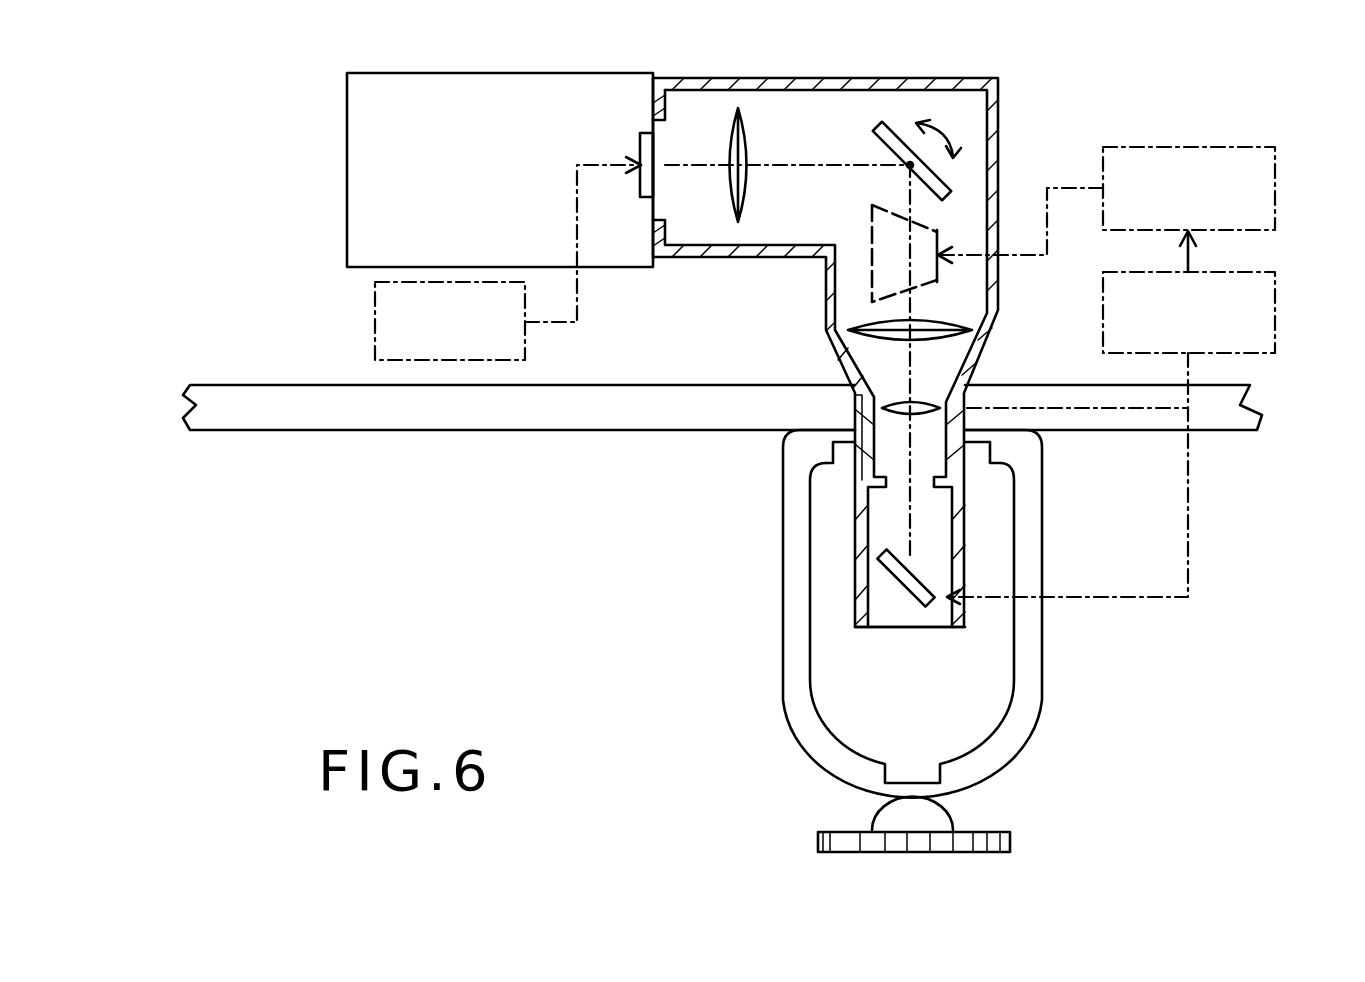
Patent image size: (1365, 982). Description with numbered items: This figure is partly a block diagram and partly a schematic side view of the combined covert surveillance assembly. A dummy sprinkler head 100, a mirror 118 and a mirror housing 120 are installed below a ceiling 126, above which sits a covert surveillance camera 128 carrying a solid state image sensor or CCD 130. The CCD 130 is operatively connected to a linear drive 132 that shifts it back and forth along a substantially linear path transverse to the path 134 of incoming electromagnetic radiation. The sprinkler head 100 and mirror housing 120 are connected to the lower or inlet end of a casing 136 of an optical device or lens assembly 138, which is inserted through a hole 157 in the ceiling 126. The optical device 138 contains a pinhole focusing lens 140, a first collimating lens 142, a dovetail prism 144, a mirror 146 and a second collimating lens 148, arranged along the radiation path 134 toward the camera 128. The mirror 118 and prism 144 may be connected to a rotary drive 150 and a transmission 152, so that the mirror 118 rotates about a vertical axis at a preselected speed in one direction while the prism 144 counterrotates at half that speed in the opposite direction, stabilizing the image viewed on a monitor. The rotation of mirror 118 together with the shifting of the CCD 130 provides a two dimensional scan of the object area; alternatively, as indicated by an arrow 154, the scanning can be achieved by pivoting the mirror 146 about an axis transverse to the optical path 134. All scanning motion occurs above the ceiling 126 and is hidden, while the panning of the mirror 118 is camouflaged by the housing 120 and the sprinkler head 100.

The sprinkler head 100 is at (1037, 667).
The mirror 118 is at (893, 572).
The mirror housing 120 is at (860, 527).
The ceiling 126 is at (423, 418).
The covert surveillance camera 128 is at (457, 87).
The solid state image sensor or CCD 130 is at (643, 148).
The drive 132 is at (375, 309).
The path of incoming electromagnetic radiation 134 is at (775, 162).
The casing 136 is at (993, 113).
The optical device or lens assembly 138 is at (1003, 180).
The pinhole focusing lens 140 is at (927, 400).
The first collimating lens 142 is at (887, 333).
The dovetail prism 144 is at (883, 270).
The mirror 146 is at (880, 125).
The second collimating lens 148 is at (730, 140).
The rotary drive 150 is at (1275, 335).
The transmission 152 is at (1275, 192).
The arrow 154 is at (947, 130).
The hole 157 is at (857, 418).